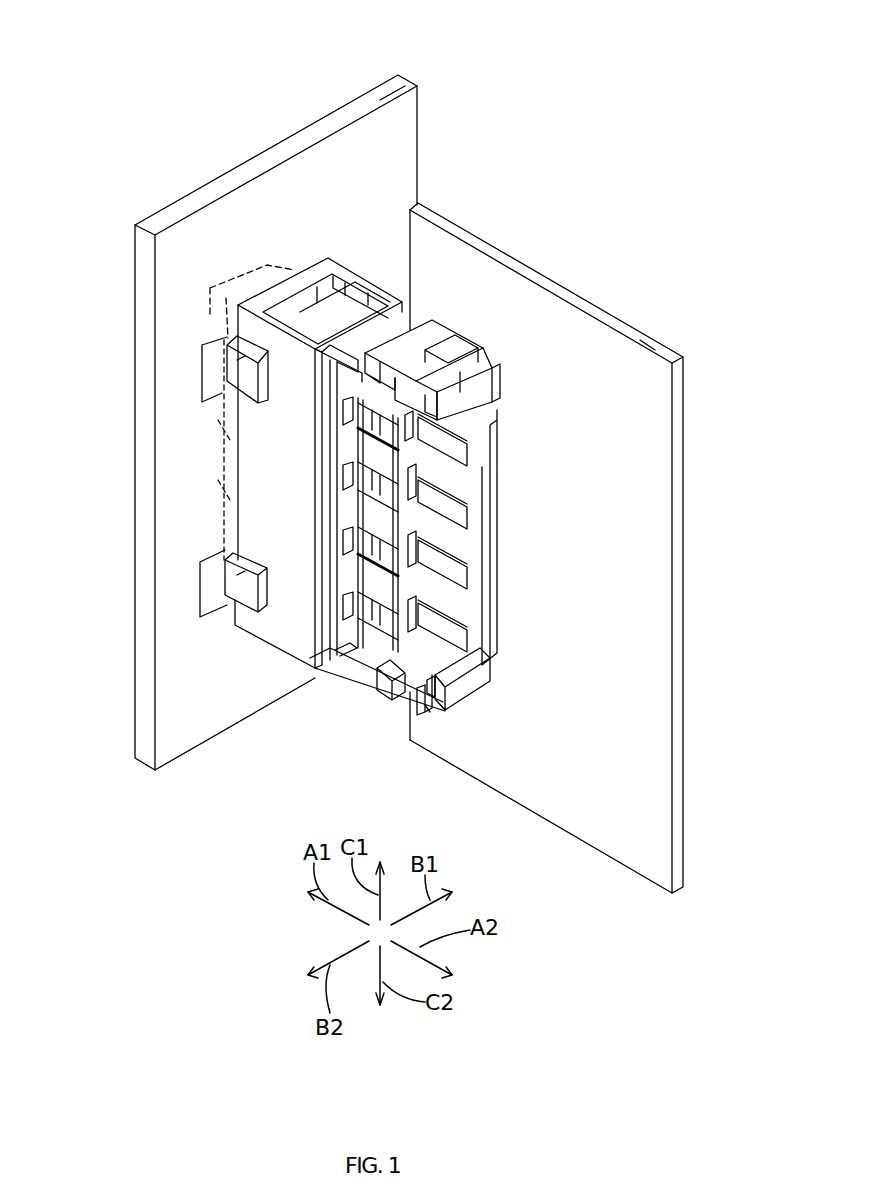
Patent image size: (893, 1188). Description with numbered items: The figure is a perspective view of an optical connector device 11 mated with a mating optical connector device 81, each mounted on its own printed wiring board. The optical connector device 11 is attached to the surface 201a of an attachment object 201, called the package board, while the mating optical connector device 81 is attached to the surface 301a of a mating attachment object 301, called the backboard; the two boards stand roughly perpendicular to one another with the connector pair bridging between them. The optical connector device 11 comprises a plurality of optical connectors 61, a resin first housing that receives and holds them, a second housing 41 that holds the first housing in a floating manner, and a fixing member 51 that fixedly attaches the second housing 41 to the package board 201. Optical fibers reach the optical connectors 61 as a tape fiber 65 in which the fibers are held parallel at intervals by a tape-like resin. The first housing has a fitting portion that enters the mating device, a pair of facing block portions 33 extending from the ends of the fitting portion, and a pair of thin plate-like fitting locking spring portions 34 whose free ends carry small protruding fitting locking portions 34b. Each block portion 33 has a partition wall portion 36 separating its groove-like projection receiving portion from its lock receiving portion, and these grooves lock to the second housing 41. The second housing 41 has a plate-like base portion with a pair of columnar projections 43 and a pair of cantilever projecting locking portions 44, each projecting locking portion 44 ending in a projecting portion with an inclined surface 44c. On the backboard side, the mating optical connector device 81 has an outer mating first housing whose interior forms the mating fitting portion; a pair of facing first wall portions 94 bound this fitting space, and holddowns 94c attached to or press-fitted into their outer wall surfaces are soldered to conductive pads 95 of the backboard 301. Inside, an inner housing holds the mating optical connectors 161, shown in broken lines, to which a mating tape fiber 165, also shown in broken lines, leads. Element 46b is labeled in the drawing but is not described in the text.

The mating attachment object 301 is at (343, 103).
The surface of mating attachment object 301a is at (398, 110).
The attachment object 201 is at (640, 377).
The surface of attachment object 201a is at (633, 355).
The mating optical connector device 81 is at (312, 255).
The fitting locking spring portion 34 is at (317, 290).
The fitting locking portion 34b is at (350, 285).
The columnar projection 43 is at (415, 353).
The partition wall portion 36 is at (430, 357).
The projecting locking portion 44 is at (450, 382).
The block portion 33 is at (493, 397).
The inclined surface 44c is at (423, 400).
The second housing 41 is at (492, 497).
The fixing member 51 is at (452, 477).
The tape fiber 65 is at (468, 525).
The optical connector 61 is at (415, 520).
The optical connector device 11 is at (470, 707).
The lower engaging portion 46b is at (428, 715).
The first wall portion 94 is at (367, 272).
The conductive pad 95 is at (210, 375).
The holddown 94c is at (240, 367).
The mating optical connector 161 is at (257, 268).
The mating tape fiber 165 is at (213, 432).